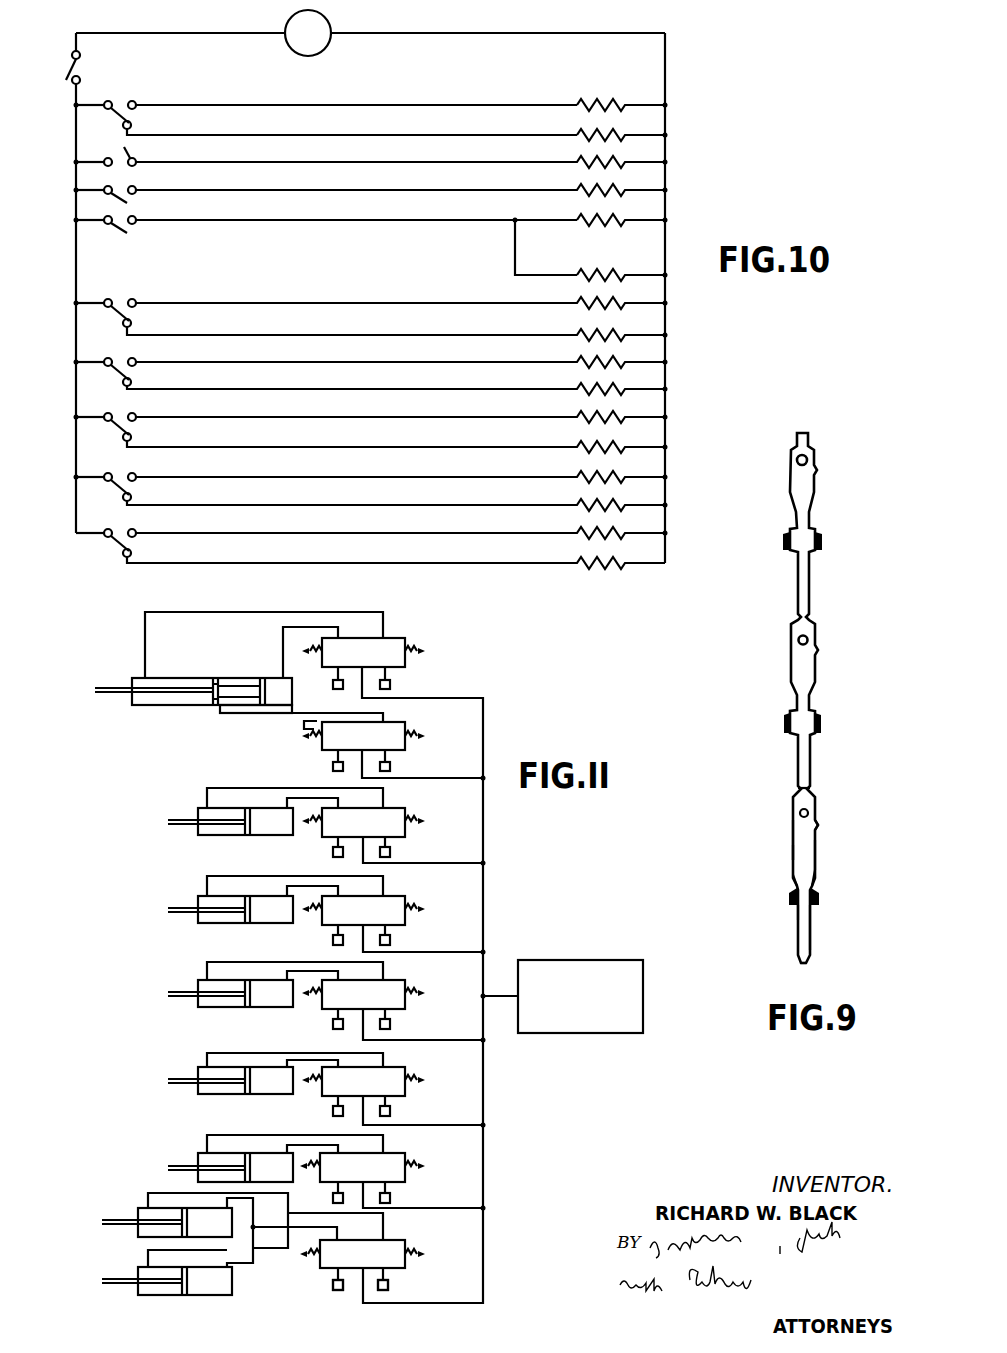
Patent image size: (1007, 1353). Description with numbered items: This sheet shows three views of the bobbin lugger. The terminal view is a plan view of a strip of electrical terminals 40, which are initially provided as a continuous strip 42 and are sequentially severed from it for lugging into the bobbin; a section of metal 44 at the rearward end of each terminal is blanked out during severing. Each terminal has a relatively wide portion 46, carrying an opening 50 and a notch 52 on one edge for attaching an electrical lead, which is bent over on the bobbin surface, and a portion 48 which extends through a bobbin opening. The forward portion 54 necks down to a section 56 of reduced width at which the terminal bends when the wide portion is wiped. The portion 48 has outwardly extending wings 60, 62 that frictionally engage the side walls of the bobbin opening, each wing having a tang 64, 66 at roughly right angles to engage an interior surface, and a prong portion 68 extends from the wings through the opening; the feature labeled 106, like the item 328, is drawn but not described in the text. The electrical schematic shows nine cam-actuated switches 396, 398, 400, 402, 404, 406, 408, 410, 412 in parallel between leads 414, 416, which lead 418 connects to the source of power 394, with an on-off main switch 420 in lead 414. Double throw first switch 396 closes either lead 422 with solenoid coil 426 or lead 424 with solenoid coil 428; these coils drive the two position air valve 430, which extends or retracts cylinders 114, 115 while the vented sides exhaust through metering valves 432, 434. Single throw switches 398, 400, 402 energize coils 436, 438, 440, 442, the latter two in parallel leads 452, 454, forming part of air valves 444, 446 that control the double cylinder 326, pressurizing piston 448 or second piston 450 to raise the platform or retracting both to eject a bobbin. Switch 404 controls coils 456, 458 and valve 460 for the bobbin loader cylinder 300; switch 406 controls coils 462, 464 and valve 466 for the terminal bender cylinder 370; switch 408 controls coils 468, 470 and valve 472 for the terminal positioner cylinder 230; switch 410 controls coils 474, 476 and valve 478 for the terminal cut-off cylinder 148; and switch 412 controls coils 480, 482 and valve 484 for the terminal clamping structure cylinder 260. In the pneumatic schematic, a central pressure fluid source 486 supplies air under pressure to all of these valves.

In FIG. 9, the electrical terminal 40 is at (822, 853).
In FIG. 9, the continuous strip 42 is at (760, 755).
In FIG. 9, the section of metal 44 is at (812, 790).
In FIG. 9, the portion 46 is at (793, 840).
In FIG. 9, the portion 48 is at (815, 918).
In FIG. 9, the opening 50 is at (810, 815).
In FIG. 9, the notch 52 is at (822, 825).
In FIG. 9, the forward portion 54 is at (795, 850).
In FIG. 9, the section of reduced width 56 is at (820, 874).
In FIG. 9, the wing 60 is at (790, 890).
In FIG. 9, the wing 62 is at (822, 890).
In FIG. 9, the tang 64 is at (794, 902).
In FIG. 9, the tang 66 is at (815, 903).
In FIG. 9, the prong portion 68 is at (812, 958).
In FIG. 9, the neck 106 is at (795, 882).
In FIG. 11, the cylinder 114 is at (134, 1238).
In FIG. 11, the cylinder 115 is at (152, 1298).
In FIG. 11, the terminal cut-off cylinder 148 is at (268, 1098).
In FIG. 11, the terminal positioner cylinder 230 is at (278, 1010).
In FIG. 11, the terminal clamping structure cylinder 260 is at (195, 1153).
In FIG. 11, the bobbin loader cylinder 300 is at (232, 838).
In FIG. 11, the double cylinder 326 is at (245, 678).
In FIG. 11, the piston rod 328 is at (120, 694).
In FIG. 11, the terminal bender cylinder 370 is at (270, 925).
In FIG. 10, the source of power 394 is at (320, 50).
In FIG. 10, the first switch 396 is at (125, 103).
In FIG. 10, the switch 398 is at (124, 156).
In FIG. 10, the switch 400 is at (130, 199).
In FIG. 10, the switch 402 is at (128, 235).
In FIG. 10, the switch 404 is at (125, 300).
In FIG. 10, the switch 406 is at (134, 365).
In FIG. 10, the switch 408 is at (134, 420).
In FIG. 10, the switch 410 is at (131, 479).
In FIG. 10, the switch 412 is at (131, 535).
In FIG. 10, the lead 414 is at (76, 270).
In FIG. 10, the lead 416 is at (670, 326).
In FIG. 10, the lead 418 is at (453, 34).
In FIG. 10, the on-off main switch 420 is at (82, 64).
In FIG. 10, the lead 422 is at (380, 108).
In FIG. 10, the lead 424 is at (385, 138).
In FIG. 10, the solenoid coil 426 is at (603, 100).
In FIG. 11, the solenoid coil 426 is at (307, 1256).
In FIG. 10, the solenoid coil 428 is at (596, 139).
In FIG. 11, the solenoid coil 428 is at (424, 1254).
In FIG. 11, the air valve 430 is at (414, 1268).
In FIG. 11, the metering valve 432 is at (334, 1289).
In FIG. 11, the metering valve 434 is at (383, 1292).
In FIG. 10, the coil 436 is at (582, 162).
In FIG. 11, the coil 436 is at (312, 643).
In FIG. 10, the coil 438 is at (585, 190).
In FIG. 11, the coil 438 is at (416, 738).
In FIG. 10, the coil 440 is at (586, 226).
In FIG. 11, the coil 440 is at (423, 651).
In FIG. 10, the coil 442 is at (612, 275).
In FIG. 11, the coil 442 is at (305, 736).
In FIG. 11, the solenoid actuated air valve 444 is at (400, 637).
In FIG. 11, the solenoid actuated air valve 446 is at (320, 750).
In FIG. 11, the piston 448 is at (258, 710).
In FIG. 11, the second piston 450 is at (214, 706).
In FIG. 10, the parallel lead 452 is at (557, 207).
In FIG. 10, the parallel lead 454 is at (516, 278).
In FIG. 10, the coil 456 is at (585, 306).
In FIG. 11, the coil 456 is at (312, 828).
In FIG. 10, the coil 458 is at (585, 337).
In FIG. 11, the coil 458 is at (420, 820).
In FIG. 11, the valve 460 is at (405, 838).
In FIG. 10, the coil 462 is at (588, 366).
In FIG. 11, the coil 462 is at (312, 916).
In FIG. 10, the coil 464 is at (588, 392).
In FIG. 11, the coil 464 is at (420, 908).
In FIG. 11, the valve 466 is at (405, 926).
In FIG. 10, the coil 468 is at (585, 421).
In FIG. 11, the coil 468 is at (312, 1000).
In FIG. 10, the coil 470 is at (588, 450).
In FIG. 11, the coil 470 is at (418, 1002).
In FIG. 11, the valve 472 is at (405, 1010).
In FIG. 10, the coil 474 is at (585, 481).
In FIG. 11, the coil 474 is at (310, 1088).
In FIG. 10, the coil 476 is at (582, 509).
In FIG. 11, the coil 476 is at (420, 1087).
In FIG. 11, the valve 478 is at (405, 1097).
In FIG. 10, the coil 480 is at (580, 538).
In FIG. 11, the coil 480 is at (306, 1168).
In FIG. 10, the coil 482 is at (592, 572).
In FIG. 11, the coil 482 is at (420, 1166).
In FIG. 11, the valve 484 is at (402, 1158).
In FIG. 11, the central pressure fluid source 486 is at (603, 1035).